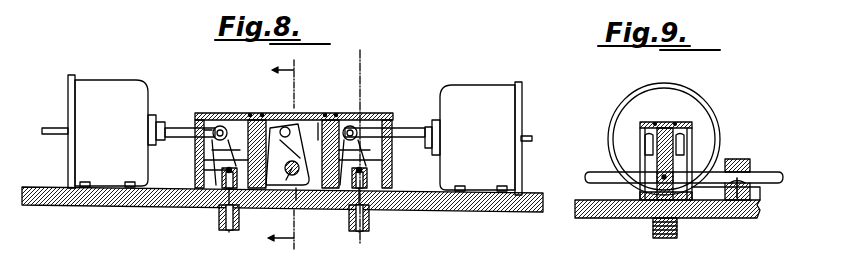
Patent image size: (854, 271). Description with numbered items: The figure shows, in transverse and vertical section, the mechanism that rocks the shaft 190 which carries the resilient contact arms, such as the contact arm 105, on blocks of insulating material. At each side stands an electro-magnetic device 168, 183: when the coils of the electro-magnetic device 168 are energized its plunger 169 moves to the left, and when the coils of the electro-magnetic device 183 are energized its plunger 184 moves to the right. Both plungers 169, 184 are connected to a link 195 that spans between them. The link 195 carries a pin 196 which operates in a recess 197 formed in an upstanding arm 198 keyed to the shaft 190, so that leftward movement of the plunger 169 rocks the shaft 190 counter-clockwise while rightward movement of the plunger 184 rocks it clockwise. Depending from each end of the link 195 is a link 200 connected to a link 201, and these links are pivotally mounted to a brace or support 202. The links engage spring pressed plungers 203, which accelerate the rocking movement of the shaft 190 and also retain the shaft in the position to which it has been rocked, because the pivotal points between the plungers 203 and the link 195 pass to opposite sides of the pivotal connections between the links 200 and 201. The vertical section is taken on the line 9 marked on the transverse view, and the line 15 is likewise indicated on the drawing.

In FIG. 8, the electro-magnetic device 168 is at (103, 131).
In FIG. 9, the electro-magnetic device 168 is at (648, 106).
In FIG. 8, the plunger 169 is at (179, 127).
In FIG. 8, the electro-magnetic device 183 is at (478, 138).
In FIG. 8, the plunger 184 is at (412, 128).
In FIG. 8, the link 195 is at (246, 117).
In FIG. 9, the link 195 is at (640, 133).
In FIG. 8, the pin 196 is at (285, 126).
In FIG. 9, the pin 196 is at (686, 140).
In FIG. 8, the recess 197 is at (300, 120).
In FIG. 8, the upstanding arm 198 is at (287, 154).
In FIG. 9, the upstanding arm 198 is at (640, 194).
In FIG. 8, the shaft 190 is at (300, 200).
In FIG. 9, the shaft 190 is at (606, 172).
In FIG. 8, the link 200 is at (197, 169).
In FIG. 9, the link 200 is at (640, 147).
In FIG. 8, the link 201 is at (246, 204).
In FIG. 8, the brace or support 202 is at (225, 150).
In FIG. 8, the spring pressed plunger 203 is at (219, 216).
In FIG. 9, the contact arm 105 is at (744, 158).
In FIG. 8, the section line 9— 9 is at (291, 156).
In FIG. 8, the section line 15 is at (374, 150).